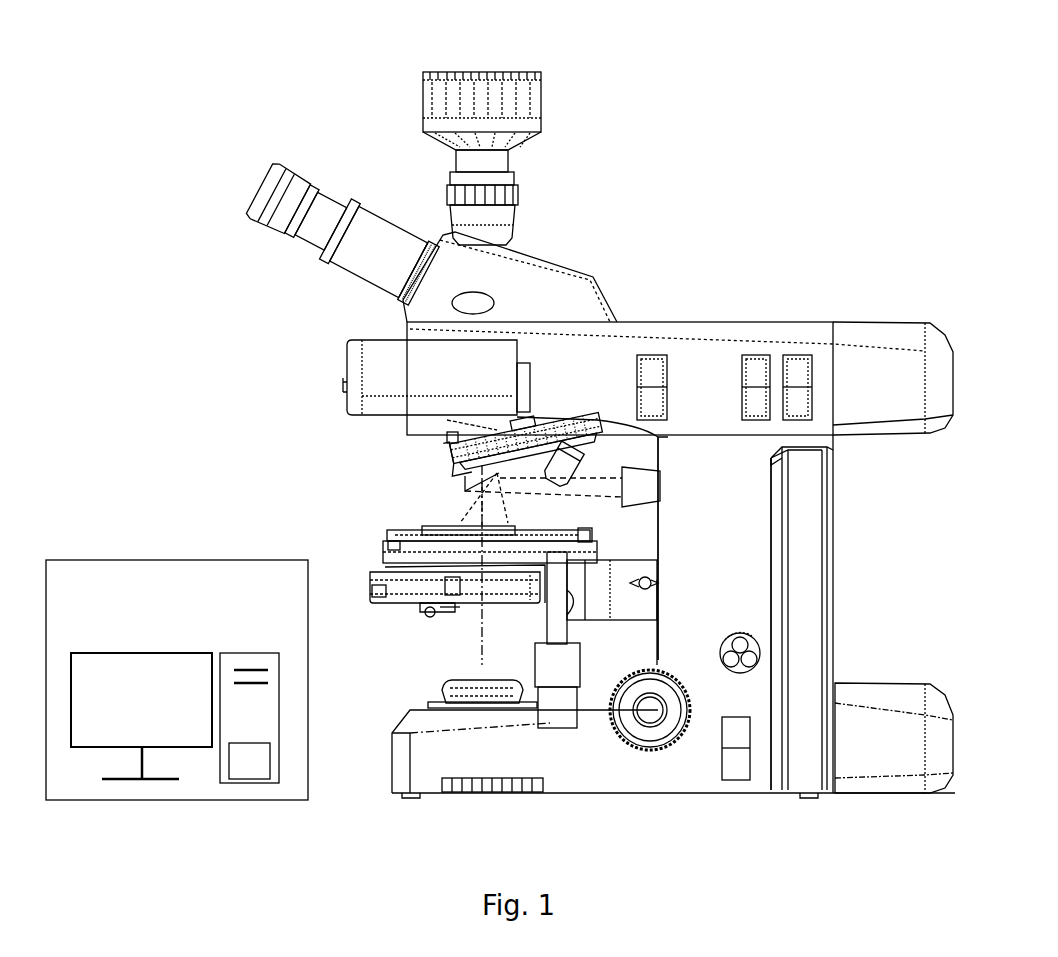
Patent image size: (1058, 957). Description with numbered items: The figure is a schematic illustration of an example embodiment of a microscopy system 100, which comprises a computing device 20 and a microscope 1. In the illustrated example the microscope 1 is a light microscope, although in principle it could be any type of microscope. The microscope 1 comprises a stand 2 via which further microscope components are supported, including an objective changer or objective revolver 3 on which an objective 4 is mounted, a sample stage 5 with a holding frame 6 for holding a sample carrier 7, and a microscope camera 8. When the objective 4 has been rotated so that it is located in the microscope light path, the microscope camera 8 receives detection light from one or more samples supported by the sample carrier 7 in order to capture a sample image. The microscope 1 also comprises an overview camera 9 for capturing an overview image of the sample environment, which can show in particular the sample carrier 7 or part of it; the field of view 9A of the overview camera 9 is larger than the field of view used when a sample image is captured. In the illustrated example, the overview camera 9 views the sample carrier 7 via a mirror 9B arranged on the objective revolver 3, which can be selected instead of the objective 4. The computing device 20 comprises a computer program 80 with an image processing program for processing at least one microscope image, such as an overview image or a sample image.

The microscopy system 100 is at (712, 58).
The microscope 1 is at (802, 280).
The stand 2 is at (813, 548).
The objective changer/revolver 3 is at (447, 437).
The objective 4 is at (575, 452).
The sample stage 5 is at (408, 548).
The holding frame 6 is at (387, 542).
The sample carrier 7 is at (407, 528).
The microscope camera 8 is at (541, 96).
The overview camera 9 is at (643, 505).
The field of view 9A is at (464, 500).
The mirror 9B is at (462, 474).
The computing device 20 is at (190, 613).
The computer program 80 is at (262, 773).